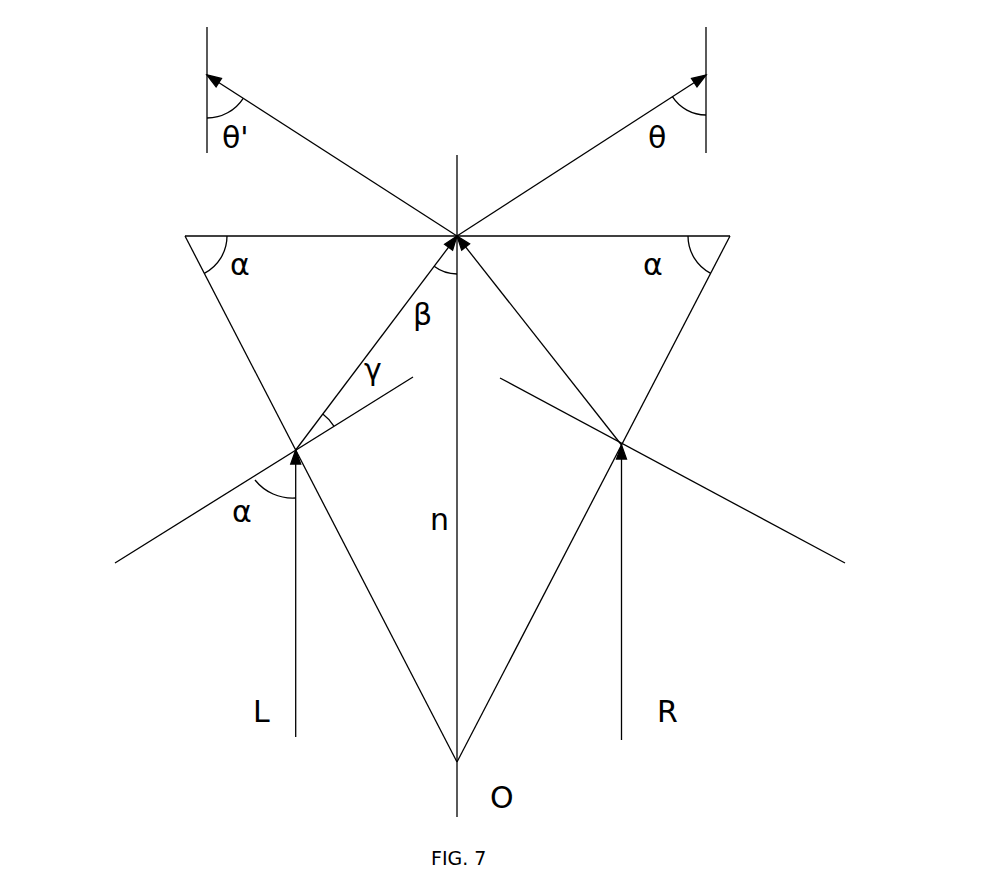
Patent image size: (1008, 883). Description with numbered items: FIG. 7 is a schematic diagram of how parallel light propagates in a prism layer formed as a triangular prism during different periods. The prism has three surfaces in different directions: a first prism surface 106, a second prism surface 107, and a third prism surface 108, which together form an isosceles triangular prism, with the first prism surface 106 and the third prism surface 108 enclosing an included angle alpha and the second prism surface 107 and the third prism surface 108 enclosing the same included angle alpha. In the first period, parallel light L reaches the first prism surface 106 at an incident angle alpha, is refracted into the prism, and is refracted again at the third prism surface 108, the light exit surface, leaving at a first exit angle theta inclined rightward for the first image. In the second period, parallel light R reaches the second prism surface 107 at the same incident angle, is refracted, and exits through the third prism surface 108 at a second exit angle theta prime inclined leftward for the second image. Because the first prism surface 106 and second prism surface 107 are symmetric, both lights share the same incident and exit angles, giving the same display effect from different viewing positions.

The first prism surface 106 is at (250, 365).
The second prism surface 107 is at (673, 365).
The third prism surface 108 is at (255, 232).